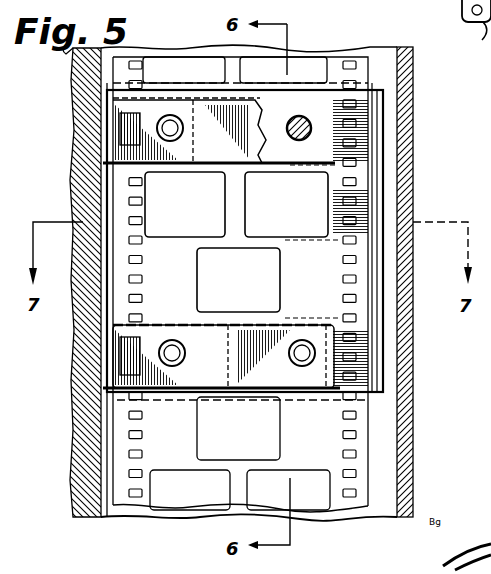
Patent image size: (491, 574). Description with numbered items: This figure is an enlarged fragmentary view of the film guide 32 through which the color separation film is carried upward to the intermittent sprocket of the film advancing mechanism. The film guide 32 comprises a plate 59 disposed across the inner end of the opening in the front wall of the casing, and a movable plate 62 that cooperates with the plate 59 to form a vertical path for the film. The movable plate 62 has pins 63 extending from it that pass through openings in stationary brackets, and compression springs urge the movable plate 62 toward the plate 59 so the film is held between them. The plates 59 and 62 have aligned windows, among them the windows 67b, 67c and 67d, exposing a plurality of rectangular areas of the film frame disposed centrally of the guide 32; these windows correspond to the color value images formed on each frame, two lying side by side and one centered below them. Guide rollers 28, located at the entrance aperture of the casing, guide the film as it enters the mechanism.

The guide rollers 28 is at (473, 25).
The film guide 32 is at (416, 422).
The plate 59 is at (378, 110).
The movable plate 62 is at (370, 370).
The pins 63 is at (301, 117).
The window 67b is at (155, 185).
The window 67c is at (200, 285).
The film frame aperture 67d is at (312, 190).